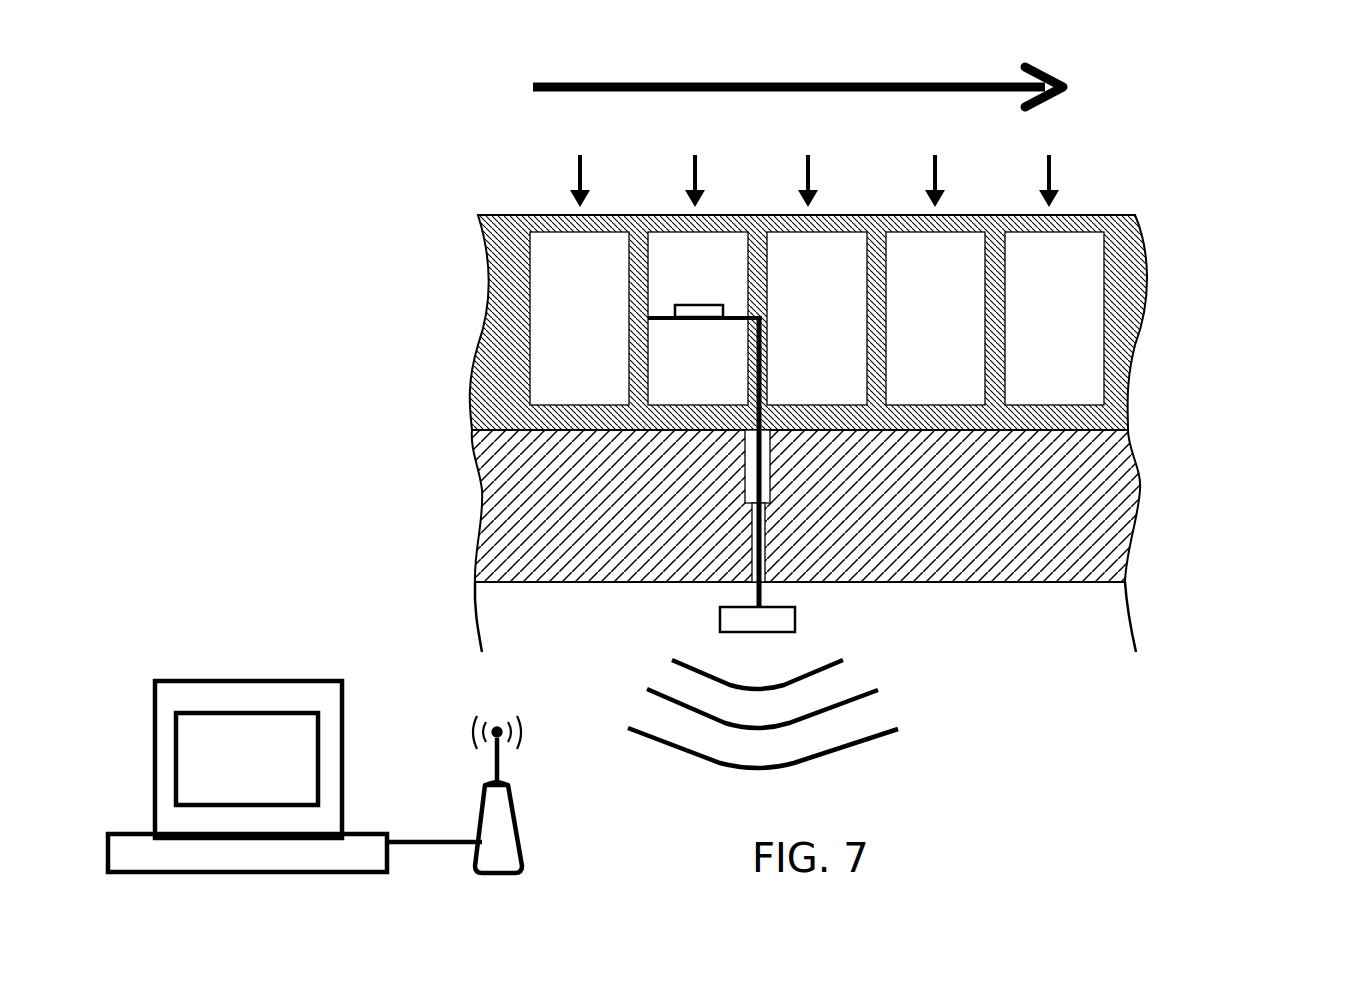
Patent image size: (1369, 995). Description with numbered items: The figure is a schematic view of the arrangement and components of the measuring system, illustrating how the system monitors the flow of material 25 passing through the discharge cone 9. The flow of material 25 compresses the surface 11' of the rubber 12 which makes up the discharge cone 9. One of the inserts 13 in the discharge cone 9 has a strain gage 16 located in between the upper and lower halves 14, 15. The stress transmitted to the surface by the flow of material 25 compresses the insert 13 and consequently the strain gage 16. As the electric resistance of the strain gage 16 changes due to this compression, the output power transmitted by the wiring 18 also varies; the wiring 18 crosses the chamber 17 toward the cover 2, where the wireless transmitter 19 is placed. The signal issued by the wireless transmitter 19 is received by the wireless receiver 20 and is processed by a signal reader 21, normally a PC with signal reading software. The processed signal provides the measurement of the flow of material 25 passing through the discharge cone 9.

The cover 2 is at (1000, 530).
The discharge cone 9 is at (995, 156).
The surface 11' is at (875, 289).
The rubber 12 is at (507, 242).
The insert 13 is at (570, 255).
The upper half 14 is at (682, 343).
The lower half 15 is at (672, 258).
The strain gage 16 is at (690, 310).
The chamber 17 is at (760, 460).
The wiring 18 is at (763, 355).
The wireless transmitter 19 is at (795, 622).
The wireless receiver 20 is at (498, 827).
The signal reader 21 is at (260, 757).
The flow of material 25 is at (1063, 87).